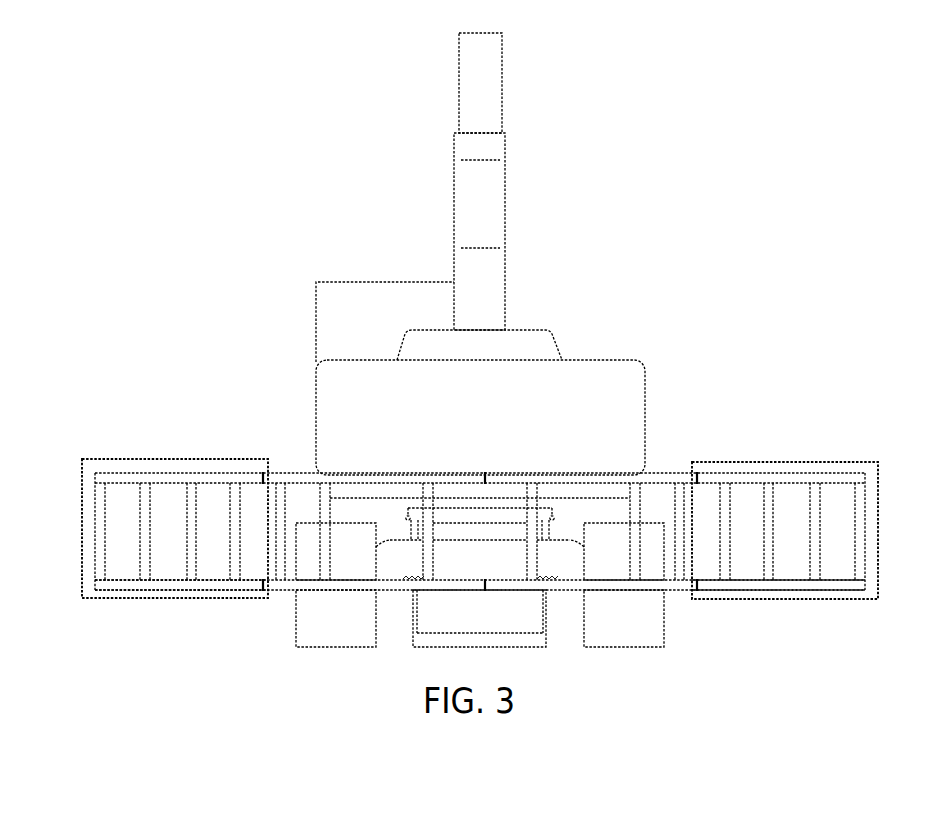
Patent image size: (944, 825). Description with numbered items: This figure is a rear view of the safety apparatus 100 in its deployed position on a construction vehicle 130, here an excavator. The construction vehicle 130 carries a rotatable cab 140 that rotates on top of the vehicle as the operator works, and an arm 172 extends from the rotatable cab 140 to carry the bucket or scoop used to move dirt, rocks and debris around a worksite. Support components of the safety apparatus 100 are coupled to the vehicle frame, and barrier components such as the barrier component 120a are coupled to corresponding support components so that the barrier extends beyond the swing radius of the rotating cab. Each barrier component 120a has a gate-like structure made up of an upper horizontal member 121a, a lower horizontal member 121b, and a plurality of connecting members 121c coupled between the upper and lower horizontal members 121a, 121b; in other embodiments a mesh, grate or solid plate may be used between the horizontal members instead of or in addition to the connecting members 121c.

The safety apparatus 100 is at (119, 418).
The barrier component 120a is at (137, 598).
The upper horizontal member 121a is at (222, 480).
The lower horizontal member 121b is at (247, 590).
The connecting members 121c is at (196, 505).
The construction vehicle 130 is at (299, 431).
The rotatable cab 140 is at (493, 433).
The arm 172 is at (492, 200).